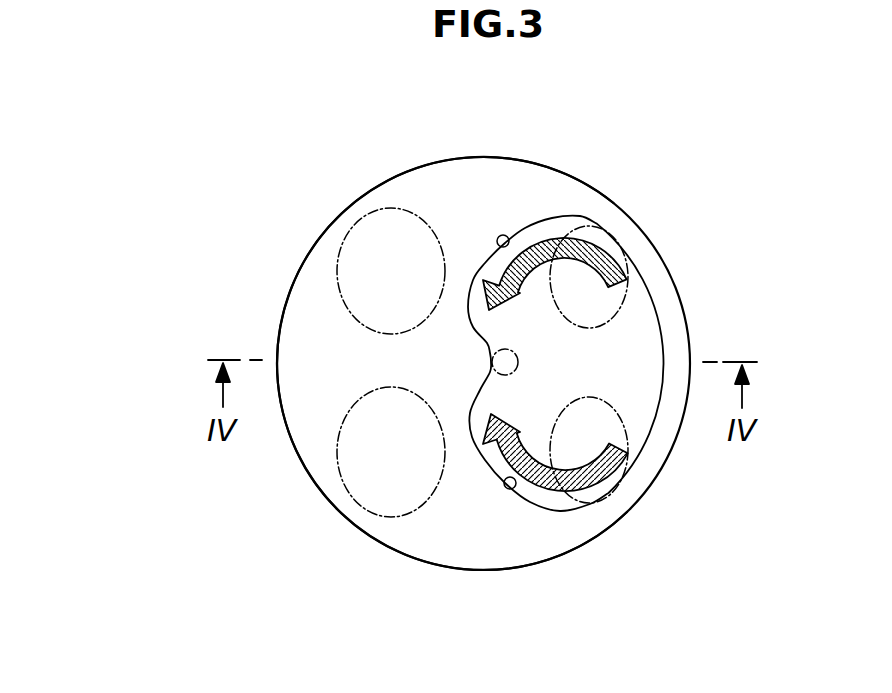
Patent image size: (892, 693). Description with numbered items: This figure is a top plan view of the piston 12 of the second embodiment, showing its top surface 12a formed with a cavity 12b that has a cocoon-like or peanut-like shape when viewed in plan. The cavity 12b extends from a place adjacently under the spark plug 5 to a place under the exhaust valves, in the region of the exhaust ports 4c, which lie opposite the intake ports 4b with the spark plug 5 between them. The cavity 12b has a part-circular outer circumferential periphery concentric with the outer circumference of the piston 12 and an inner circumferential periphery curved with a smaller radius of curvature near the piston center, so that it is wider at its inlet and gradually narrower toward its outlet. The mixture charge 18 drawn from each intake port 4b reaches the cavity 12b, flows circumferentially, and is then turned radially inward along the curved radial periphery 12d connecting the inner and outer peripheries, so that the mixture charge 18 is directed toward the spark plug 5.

The piston 12 is at (635, 215).
The top surface 12a is at (438, 190).
The cavity 12b is at (638, 327).
The curved radial periphery 12d is at (497, 236).
The intake port 4b is at (338, 265).
The exhaust port 4c is at (628, 268).
The spark plug 5 is at (518, 350).
The mixture charge 18 is at (553, 245).